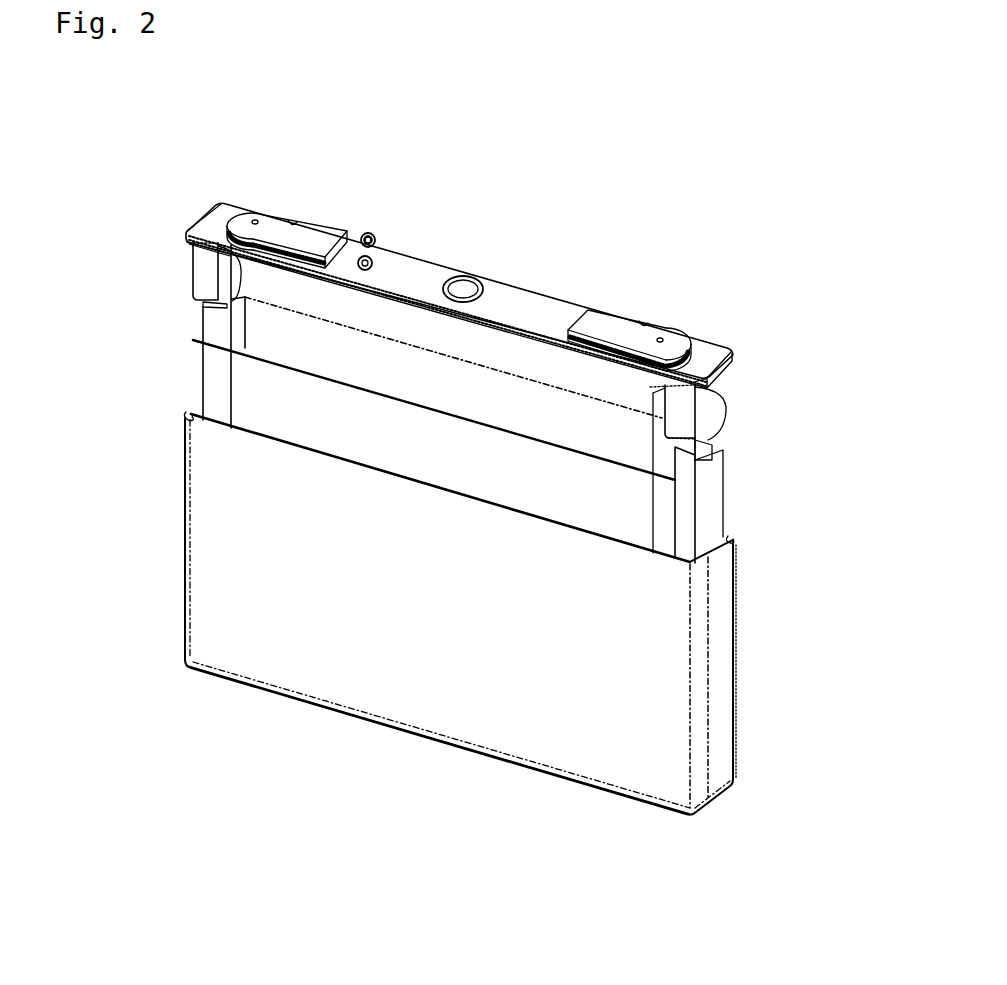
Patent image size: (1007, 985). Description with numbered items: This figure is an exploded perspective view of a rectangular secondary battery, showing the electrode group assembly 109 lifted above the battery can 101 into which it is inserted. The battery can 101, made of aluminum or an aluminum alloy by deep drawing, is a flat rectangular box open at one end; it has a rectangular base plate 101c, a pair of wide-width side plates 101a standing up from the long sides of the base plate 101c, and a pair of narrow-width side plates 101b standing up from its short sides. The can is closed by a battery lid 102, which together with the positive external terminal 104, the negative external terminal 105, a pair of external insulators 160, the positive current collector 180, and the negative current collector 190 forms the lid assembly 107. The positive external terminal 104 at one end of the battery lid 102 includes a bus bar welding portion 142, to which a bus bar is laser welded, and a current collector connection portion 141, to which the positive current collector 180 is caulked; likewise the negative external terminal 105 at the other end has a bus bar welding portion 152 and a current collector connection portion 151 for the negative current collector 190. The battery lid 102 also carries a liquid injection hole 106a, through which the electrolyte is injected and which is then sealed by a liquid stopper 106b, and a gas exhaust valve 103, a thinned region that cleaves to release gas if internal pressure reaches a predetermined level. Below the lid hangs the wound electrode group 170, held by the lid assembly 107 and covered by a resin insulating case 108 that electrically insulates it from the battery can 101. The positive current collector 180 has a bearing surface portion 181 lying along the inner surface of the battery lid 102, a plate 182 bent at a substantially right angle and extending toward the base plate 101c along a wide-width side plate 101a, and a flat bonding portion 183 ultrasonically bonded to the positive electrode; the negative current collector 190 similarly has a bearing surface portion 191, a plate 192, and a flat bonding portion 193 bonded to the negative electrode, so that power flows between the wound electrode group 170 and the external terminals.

The battery can 101 is at (205, 525).
The wide-width side plates 101a is at (287, 625).
The narrow-width side plates 101b is at (715, 702).
The base plate 101c is at (417, 737).
The battery lid 102 is at (544, 320).
The gas exhaust valve 103 is at (464, 290).
The positive external terminal 104 is at (302, 164).
The negative external terminal 105 is at (645, 267).
The liquid injection hole 106a is at (372, 257).
The liquid stopper 106b is at (367, 232).
The lid assembly 107 is at (744, 366).
The insulating case 108 is at (690, 563).
The electrode group assembly 109 is at (200, 182).
The current collector connection portion 141 is at (261, 203).
The bus bar welding portion 142 is at (326, 222).
The current collector connection portion 151 is at (670, 323).
The bus bar welding portion 152 is at (611, 300).
The external insulators 160 is at (238, 258).
The wound electrode group 170 is at (466, 390).
The positive current collector 180 is at (183, 289).
The bearing surface portion 181 is at (232, 256).
The plate 182 is at (206, 297).
The flat bonding portion 183 is at (213, 328).
The negative current collector 190 is at (705, 440).
The bearing surface portion 191 is at (700, 414).
The plate 192 is at (700, 470).
The flat bonding portion 193 is at (710, 510).